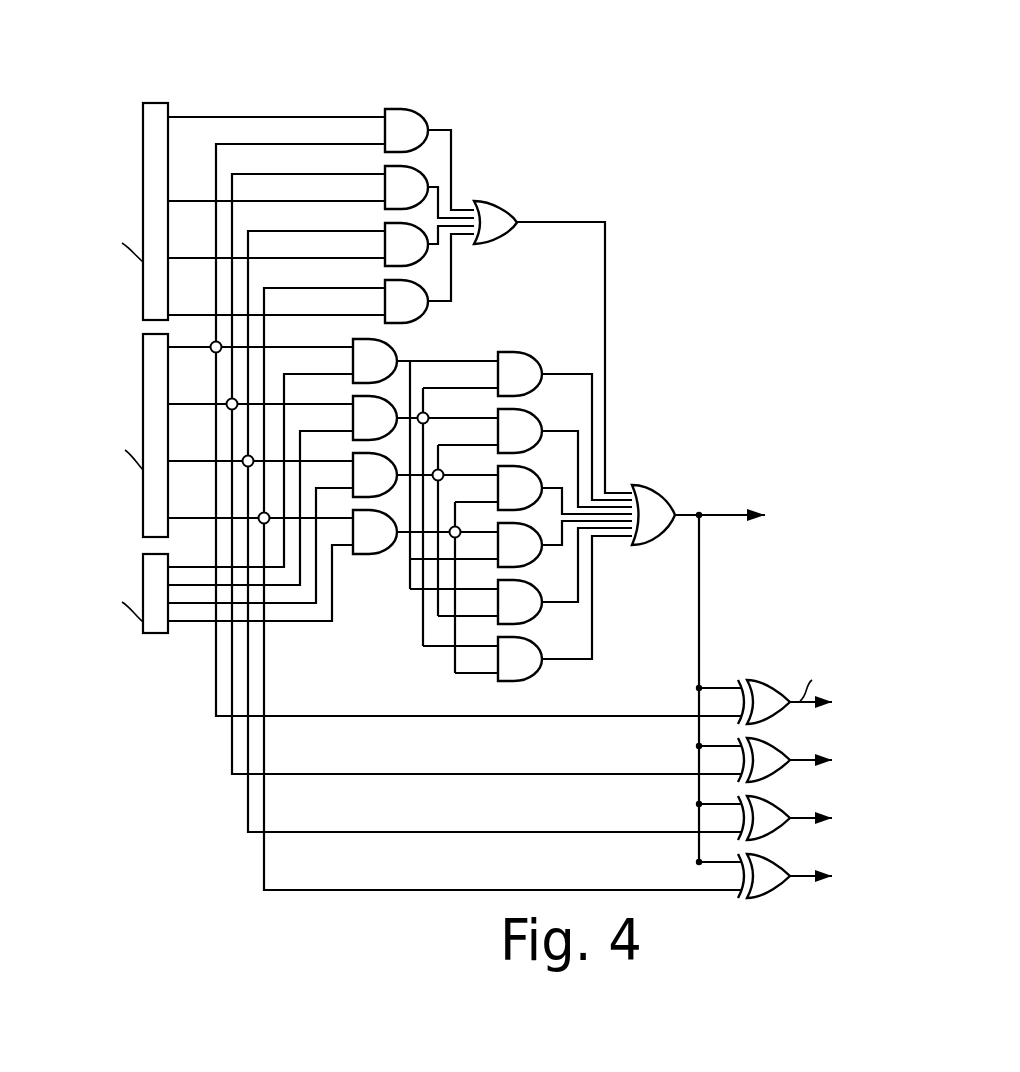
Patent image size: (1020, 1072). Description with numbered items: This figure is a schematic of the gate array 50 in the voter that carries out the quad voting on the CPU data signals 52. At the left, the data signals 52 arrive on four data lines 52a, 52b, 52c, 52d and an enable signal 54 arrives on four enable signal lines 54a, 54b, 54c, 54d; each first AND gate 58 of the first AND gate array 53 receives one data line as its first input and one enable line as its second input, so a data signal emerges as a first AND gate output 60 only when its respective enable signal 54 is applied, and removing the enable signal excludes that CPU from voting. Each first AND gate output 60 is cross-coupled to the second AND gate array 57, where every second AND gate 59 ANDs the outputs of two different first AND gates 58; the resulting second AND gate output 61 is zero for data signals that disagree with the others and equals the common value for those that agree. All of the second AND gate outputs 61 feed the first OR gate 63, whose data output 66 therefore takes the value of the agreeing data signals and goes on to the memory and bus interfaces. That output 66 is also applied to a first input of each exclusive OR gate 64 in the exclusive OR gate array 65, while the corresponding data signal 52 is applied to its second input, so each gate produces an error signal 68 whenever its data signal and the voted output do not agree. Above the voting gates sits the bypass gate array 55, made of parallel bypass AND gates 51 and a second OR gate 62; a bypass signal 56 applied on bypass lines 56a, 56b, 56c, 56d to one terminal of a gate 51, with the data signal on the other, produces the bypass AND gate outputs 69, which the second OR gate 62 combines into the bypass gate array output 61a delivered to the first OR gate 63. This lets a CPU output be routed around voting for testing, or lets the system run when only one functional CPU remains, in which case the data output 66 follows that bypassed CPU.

The gate array 50 is at (688, 93).
The bypass AND gate 51 is at (420, 109).
The CPU data signal 52 is at (90, 450).
The data line 52a is at (182, 349).
The data line 52b is at (178, 402).
The data line 52c is at (193, 463).
The data line 52d is at (183, 511).
The first AND gate array 53 is at (400, 511).
The enable signal 54 is at (93, 604).
The enable signal line 54a is at (184, 567).
The enable signal line 54b is at (190, 585).
The enable signal line 54c is at (199, 603).
The enable signal line 54d is at (213, 621).
The bypass gate array 55 is at (435, 169).
The bypass signal 56 is at (101, 223).
The bypass signal line 56a is at (207, 114).
The bypass signal line 56b is at (197, 200).
The bypass signal line 56c is at (197, 262).
The bypass signal line 56d is at (197, 317).
The second AND gate array 57 is at (565, 546).
The first AND gate 58 is at (396, 349).
The second AND gate 59 is at (536, 356).
The first AND gate output 60 is at (433, 672).
The second AND gate output 61 is at (617, 431).
The bypass gate array output 61a is at (605, 390).
The second OR gate 62 is at (509, 204).
The first OR gate 63 is at (665, 496).
The exclusive OR gate 64 is at (792, 742).
The exclusive OR gate array 65 is at (807, 737).
The data signal output 66 is at (793, 507).
The error signal 68 is at (848, 749).
The bypass AND gate output 69 is at (460, 169).